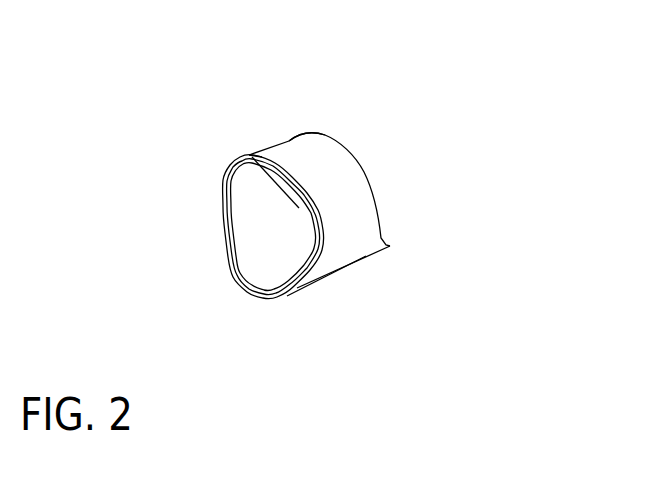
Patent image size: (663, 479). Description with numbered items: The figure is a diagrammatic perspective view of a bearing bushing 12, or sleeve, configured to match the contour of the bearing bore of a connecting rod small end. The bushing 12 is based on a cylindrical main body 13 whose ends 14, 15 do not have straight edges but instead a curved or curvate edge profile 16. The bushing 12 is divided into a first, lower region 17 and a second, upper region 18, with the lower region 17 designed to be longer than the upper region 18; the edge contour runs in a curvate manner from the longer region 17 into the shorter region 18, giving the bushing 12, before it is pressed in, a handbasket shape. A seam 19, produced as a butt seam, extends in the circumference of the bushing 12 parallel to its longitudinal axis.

The bearing bushing 12 is at (442, 215).
The cylindrical main body 13 is at (353, 267).
The end 14 is at (213, 267).
The end 15 is at (248, 155).
The curvate edge profile 16 is at (225, 218).
The first, lower region 17 is at (253, 283).
The second, upper region 18 is at (289, 141).
The seam 19 is at (290, 193).